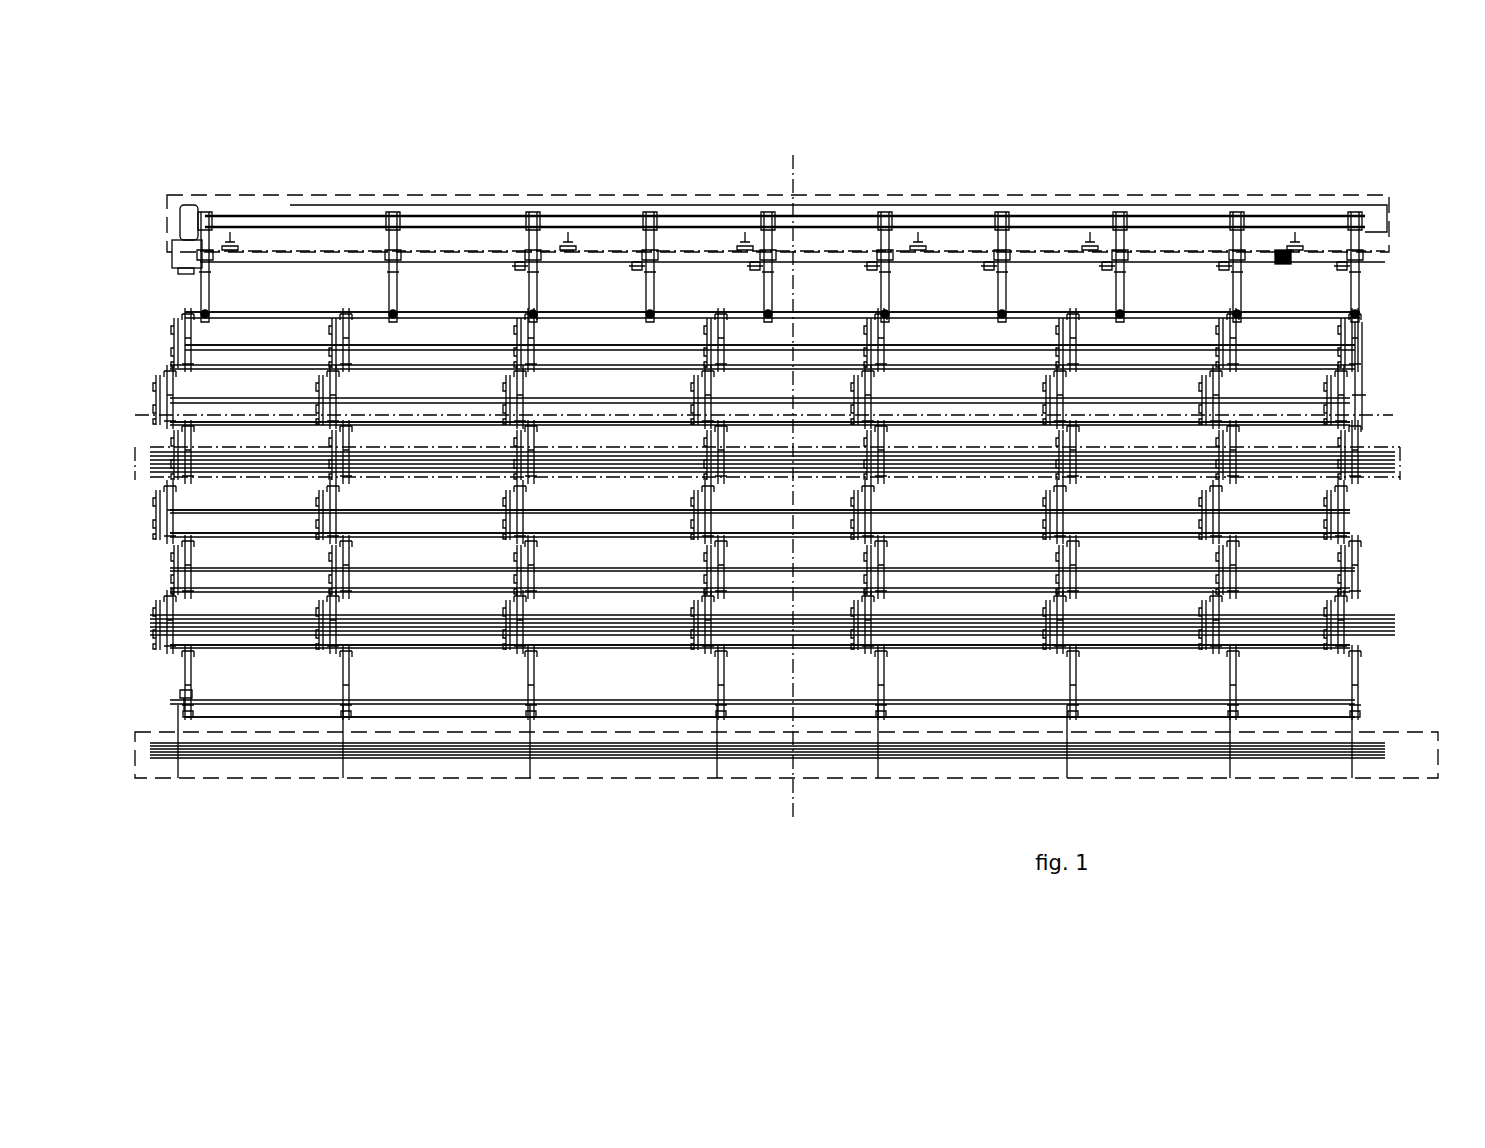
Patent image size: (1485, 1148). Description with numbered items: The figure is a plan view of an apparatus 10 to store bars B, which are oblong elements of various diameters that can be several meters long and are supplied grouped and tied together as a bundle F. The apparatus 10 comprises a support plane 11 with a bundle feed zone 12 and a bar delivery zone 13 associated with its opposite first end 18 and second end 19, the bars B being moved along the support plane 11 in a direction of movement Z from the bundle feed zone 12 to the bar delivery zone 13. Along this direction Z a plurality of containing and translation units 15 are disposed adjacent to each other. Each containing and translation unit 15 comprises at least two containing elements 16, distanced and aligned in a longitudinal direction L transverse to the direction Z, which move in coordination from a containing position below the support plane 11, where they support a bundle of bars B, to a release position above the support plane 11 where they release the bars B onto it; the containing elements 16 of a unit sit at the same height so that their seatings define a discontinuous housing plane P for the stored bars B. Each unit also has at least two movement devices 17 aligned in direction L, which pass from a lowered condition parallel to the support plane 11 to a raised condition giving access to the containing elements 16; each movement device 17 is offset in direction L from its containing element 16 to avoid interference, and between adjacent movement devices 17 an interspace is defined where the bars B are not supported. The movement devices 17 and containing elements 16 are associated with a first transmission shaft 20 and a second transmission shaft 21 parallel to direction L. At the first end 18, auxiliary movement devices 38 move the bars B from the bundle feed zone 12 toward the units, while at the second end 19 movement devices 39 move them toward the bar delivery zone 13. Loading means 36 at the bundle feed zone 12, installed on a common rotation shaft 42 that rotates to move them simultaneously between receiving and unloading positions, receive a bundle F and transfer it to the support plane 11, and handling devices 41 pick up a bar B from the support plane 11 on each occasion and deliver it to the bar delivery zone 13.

The apparatus to store bars 10 is at (1298, 184).
The support plane 11 is at (1405, 428).
The bundle feed zone 12 is at (135, 786).
The bar delivery zone 13 is at (222, 190).
The containing and translation unit 15 is at (1370, 364).
The containing element 16 is at (172, 338).
The movement device 17 is at (199, 321).
The first end 18 is at (172, 666).
The second end 19 is at (202, 310).
The first transmission shaft 20 is at (398, 347).
The second transmission shaft 21 is at (468, 313).
The loading means 36 is at (174, 744).
The auxiliary movement device 38 is at (340, 663).
The movement device 39 is at (216, 291).
The handling device 41 is at (522, 272).
The common rotation shaft 42 is at (216, 724).
The direction of movement Z is at (795, 166).
The longitudinal direction L is at (165, 416).
The housing plane P is at (150, 474).
The bar B is at (1386, 749).
The bundle F is at (1385, 782).